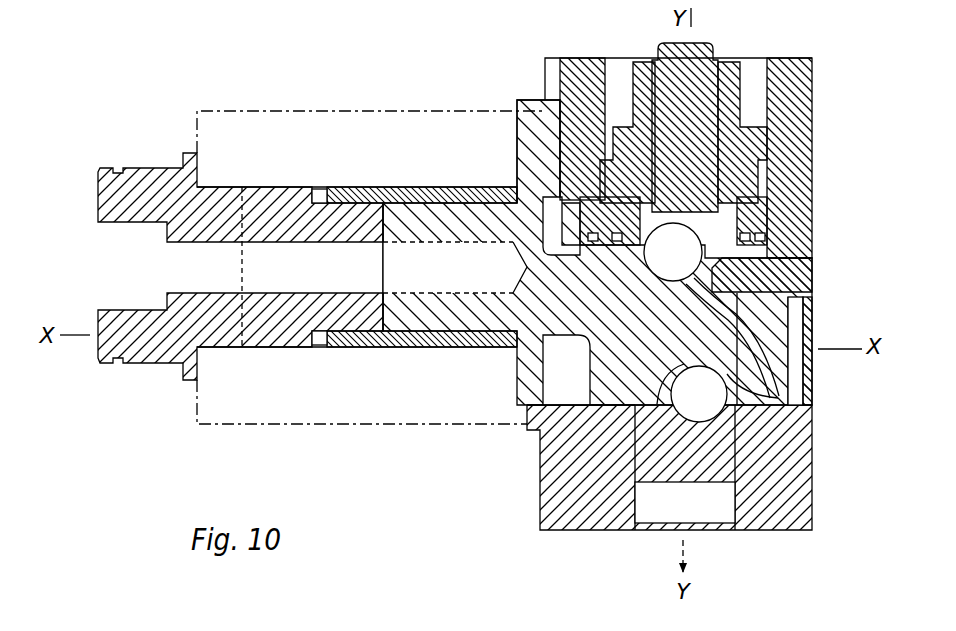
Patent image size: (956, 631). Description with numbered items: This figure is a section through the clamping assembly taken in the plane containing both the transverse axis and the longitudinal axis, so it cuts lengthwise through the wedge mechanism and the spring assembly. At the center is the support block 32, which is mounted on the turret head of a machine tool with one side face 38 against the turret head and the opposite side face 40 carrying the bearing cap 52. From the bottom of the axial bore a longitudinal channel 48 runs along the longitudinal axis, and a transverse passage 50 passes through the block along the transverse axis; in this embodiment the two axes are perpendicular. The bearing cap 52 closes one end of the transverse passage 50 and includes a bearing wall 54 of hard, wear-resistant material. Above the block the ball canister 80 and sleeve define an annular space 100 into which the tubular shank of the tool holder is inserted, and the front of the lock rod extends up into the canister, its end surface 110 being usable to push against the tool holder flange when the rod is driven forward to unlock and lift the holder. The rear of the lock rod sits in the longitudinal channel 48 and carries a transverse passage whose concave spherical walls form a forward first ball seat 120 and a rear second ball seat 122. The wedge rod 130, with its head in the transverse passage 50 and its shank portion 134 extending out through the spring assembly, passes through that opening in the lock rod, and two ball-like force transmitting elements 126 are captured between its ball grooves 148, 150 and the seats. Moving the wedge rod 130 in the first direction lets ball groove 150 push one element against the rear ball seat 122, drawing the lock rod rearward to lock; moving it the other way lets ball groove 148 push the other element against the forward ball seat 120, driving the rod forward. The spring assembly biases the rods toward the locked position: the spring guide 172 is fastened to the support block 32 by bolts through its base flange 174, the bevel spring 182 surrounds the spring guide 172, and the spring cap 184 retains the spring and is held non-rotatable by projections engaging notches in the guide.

The support block 32 is at (768, 538).
The side face 38 is at (540, 442).
The side face 40 is at (812, 470).
The longitudinal channel 48 is at (698, 515).
The transverse passage 50 is at (568, 392).
The bearing cap 52 is at (800, 270).
The bearing wall 54 is at (792, 318).
The ball canister 80 is at (740, 103).
The annular space 100 is at (757, 70).
The end surface 110 is at (700, 47).
The first ball seat 120 is at (690, 250).
The second ball seat 122 is at (613, 531).
The force transmitting elements 126 is at (752, 228).
The wedge rod 130 is at (812, 406).
The shank portion 134 is at (422, 305).
The ball groove 148 is at (790, 358).
The ball groove 150 is at (762, 390).
The spring guide 172 is at (413, 188).
The base flange 174 is at (518, 190).
The bevel spring 182 is at (308, 125).
The spring cap 184 is at (96, 190).